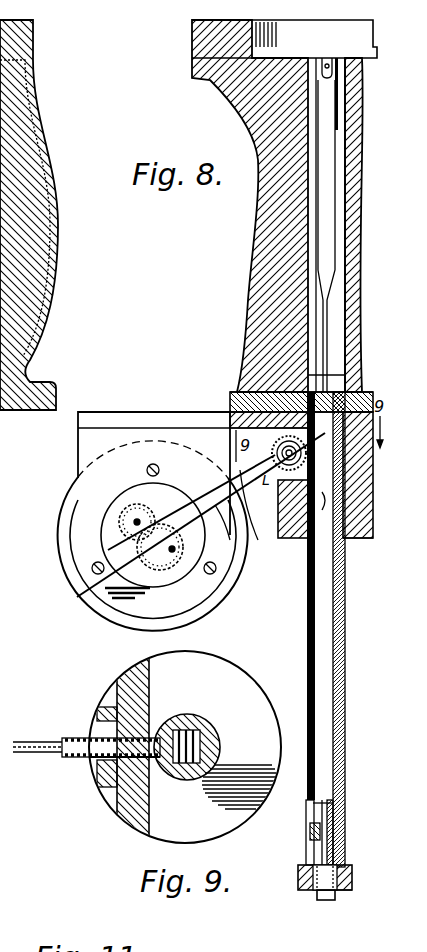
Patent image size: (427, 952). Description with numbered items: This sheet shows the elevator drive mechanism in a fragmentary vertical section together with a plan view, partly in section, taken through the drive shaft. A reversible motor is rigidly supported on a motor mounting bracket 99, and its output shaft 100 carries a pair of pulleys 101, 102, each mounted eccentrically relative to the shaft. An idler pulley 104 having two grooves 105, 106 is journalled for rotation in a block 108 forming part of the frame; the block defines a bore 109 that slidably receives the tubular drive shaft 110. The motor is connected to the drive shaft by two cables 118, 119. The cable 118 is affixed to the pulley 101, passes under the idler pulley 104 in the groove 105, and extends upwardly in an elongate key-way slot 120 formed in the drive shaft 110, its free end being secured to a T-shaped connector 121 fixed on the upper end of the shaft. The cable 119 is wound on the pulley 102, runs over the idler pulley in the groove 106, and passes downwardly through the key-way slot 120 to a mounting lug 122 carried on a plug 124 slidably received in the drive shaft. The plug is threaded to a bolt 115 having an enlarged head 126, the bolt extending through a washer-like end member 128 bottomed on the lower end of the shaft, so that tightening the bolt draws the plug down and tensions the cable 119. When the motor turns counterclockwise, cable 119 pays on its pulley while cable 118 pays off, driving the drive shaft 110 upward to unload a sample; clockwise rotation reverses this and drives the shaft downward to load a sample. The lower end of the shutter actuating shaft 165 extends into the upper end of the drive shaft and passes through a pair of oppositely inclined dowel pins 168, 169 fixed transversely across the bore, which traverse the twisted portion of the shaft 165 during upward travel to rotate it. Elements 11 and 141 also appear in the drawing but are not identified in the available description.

In FIG. 8, the motor mounting bracket 99 is at (83, 443).
In FIG. 8, the output shaft 100 is at (128, 508).
In FIG. 8, the pulley 101 is at (125, 512).
In FIG. 8, the pulley 102 is at (80, 597).
In FIG. 8, the idler pulley 104 is at (233, 400).
In FIG. 9, the idler pulley 104 is at (95, 708).
In FIG. 9, the groove 105 is at (92, 736).
In FIG. 9, the groove 106 is at (80, 758).
In FIG. 8, the block 108 is at (347, 545).
In FIG. 8, the bore 109 is at (330, 501).
In FIG. 8, the tubular drive shaft 110 is at (342, 602).
In FIG. 8, the screws 11 is at (93, 523).
In FIG. 8, the bolt 115 is at (307, 895).
In FIG. 8, the cable 118 is at (255, 530).
In FIG. 9, the cable 118 is at (42, 740).
In FIG. 8, the cable 119 is at (200, 492).
In FIG. 9, the cable 119 is at (52, 755).
In FIG. 8, the key-way slot 120 is at (307, 582).
In FIG. 8, the T-shaped connector 121 is at (362, 372).
In FIG. 8, the mounting lug 122 is at (310, 837).
In FIG. 8, the plug 124 is at (345, 833).
In FIG. 8, the enlarged head 126 is at (325, 902).
In FIG. 8, the washer-like end member 128 is at (340, 895).
In FIG. 8, the arm 141 is at (70, 493).
In FIG. 9, the shutter actuating shaft 165 is at (166, 779).
In FIG. 8, the dowel pin 168 is at (263, 397).
In FIG. 9, the dowel pin 168 is at (181, 718).
In FIG. 9, the dowel pin 169 is at (219, 736).